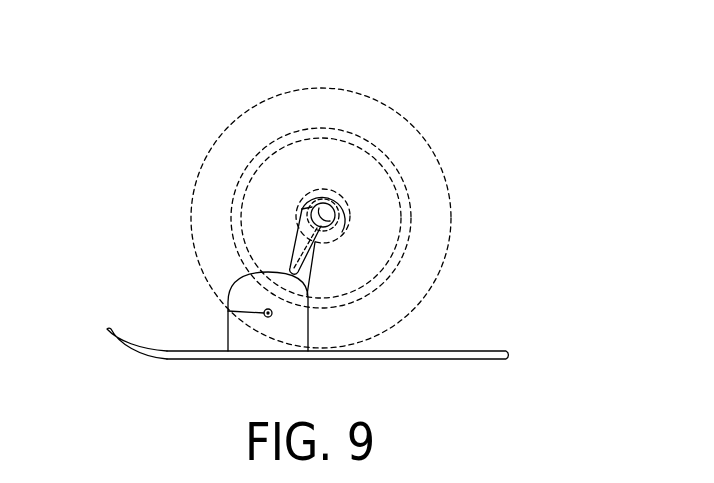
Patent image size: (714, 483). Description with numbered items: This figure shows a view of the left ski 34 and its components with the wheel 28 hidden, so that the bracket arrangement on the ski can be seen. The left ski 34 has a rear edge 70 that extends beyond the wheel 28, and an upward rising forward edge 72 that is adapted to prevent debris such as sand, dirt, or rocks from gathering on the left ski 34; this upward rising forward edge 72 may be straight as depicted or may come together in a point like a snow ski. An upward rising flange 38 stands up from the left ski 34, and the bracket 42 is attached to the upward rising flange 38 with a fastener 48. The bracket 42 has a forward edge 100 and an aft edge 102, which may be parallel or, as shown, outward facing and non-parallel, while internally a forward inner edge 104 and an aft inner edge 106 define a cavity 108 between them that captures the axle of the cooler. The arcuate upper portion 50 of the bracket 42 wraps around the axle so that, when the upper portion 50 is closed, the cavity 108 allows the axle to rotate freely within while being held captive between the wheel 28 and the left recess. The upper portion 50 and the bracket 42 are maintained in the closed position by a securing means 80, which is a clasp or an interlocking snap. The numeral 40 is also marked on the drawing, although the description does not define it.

The wheel 28 is at (390, 108).
The left ski 34 is at (462, 363).
The upward rising flange 38 is at (228, 337).
The arm 40 is at (267, 312).
The bracket 42 is at (325, 243).
The fastener 48 is at (228, 311).
The upper portion 50 is at (323, 193).
The rear edge 70 is at (512, 355).
The upward rising forward edge 72 is at (118, 345).
The securing means 80 is at (305, 203).
The forward edge 100 is at (266, 270).
The aft edge 102 is at (332, 248).
The forward inner edge 104 is at (302, 228).
The aft inner edge 106 is at (333, 247).
The cavity 108 is at (343, 231).